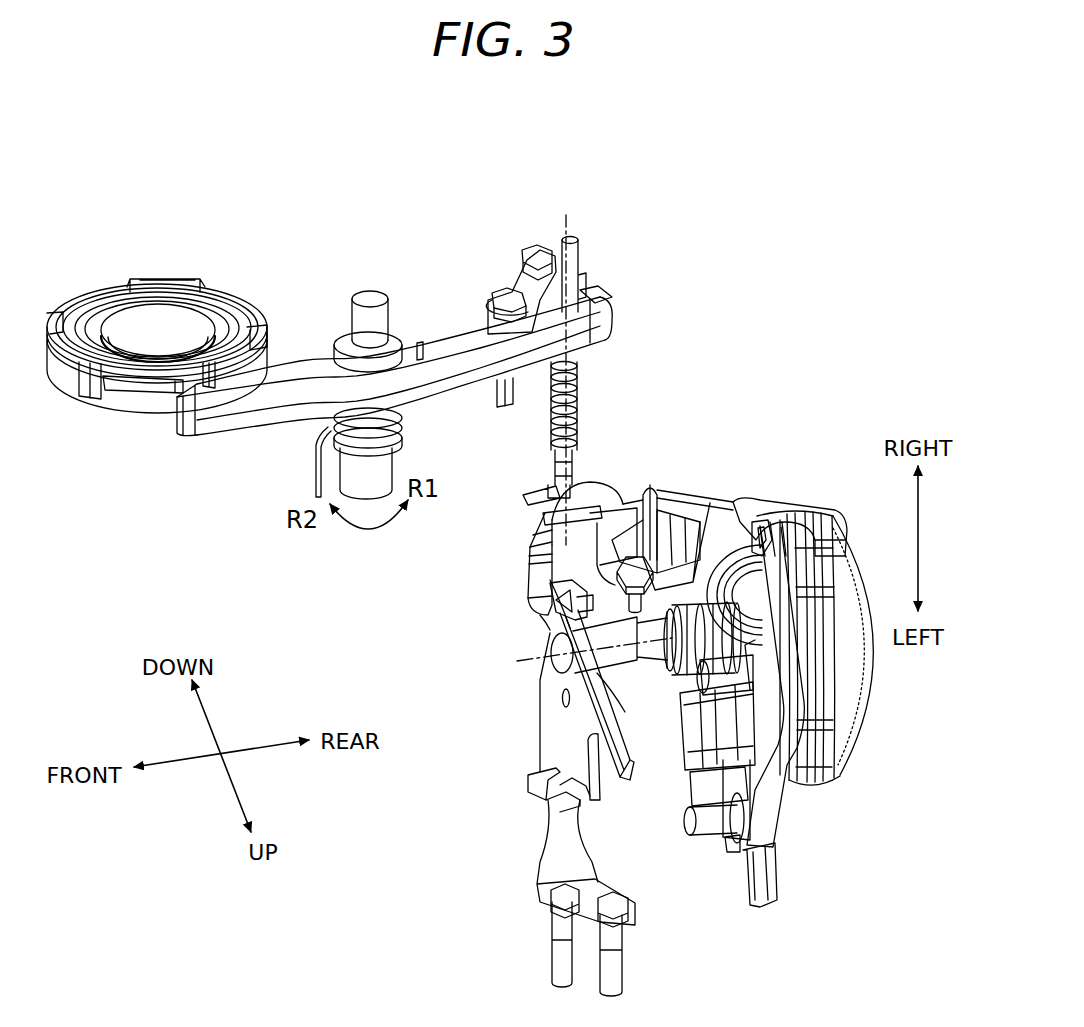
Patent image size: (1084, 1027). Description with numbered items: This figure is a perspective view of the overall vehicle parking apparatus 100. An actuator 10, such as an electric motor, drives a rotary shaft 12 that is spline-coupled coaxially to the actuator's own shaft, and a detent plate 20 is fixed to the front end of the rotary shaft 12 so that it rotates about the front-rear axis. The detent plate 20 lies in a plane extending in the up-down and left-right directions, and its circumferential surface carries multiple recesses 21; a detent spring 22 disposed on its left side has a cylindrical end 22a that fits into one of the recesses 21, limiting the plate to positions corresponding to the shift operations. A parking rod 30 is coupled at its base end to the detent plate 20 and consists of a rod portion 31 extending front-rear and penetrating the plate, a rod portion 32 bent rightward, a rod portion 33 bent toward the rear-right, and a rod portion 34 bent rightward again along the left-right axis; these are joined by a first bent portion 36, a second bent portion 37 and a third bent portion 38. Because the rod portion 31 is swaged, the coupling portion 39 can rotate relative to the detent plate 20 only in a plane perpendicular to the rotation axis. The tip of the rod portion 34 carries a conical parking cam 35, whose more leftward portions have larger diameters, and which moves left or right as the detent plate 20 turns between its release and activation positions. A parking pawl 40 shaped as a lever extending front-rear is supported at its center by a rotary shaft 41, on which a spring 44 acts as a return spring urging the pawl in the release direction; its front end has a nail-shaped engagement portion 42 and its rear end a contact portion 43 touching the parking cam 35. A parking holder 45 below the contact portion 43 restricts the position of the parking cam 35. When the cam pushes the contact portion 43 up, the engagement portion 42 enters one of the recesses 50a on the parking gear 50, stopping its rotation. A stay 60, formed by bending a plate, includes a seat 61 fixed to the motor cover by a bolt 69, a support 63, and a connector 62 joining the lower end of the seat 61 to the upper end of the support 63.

The vehicle parking apparatus 100 is at (672, 210).
The actuator 10 is at (870, 688).
The rotary shaft 12 is at (625, 712).
The detent plate 20 is at (536, 742).
The recesses 21 is at (580, 806).
The detent spring 22 is at (542, 862).
The cylindrical end 22a is at (540, 778).
The parking rod 30 is at (586, 383).
The rod portion 31 is at (560, 515).
The rod portion 32 is at (522, 580).
The rod portion 33 is at (536, 524).
The rod portion 34 is at (578, 414).
The parking cam 35 is at (576, 282).
The first bent portion 36 is at (537, 606).
The second bent portion 37 is at (526, 549).
The third bent portion 38 is at (551, 487).
The coupling portion 39 is at (636, 648).
The parking pawl 40 is at (446, 340).
The rotary shaft 41 is at (372, 294).
The engagement portion 42 is at (186, 388).
The contact portion 43 is at (598, 296).
The spring 44 is at (400, 428).
The parking holder 45 is at (531, 290).
The parking gear 50 is at (68, 372).
The recesses 50a is at (99, 392).
The stay 60 is at (617, 490).
The seat 61 is at (750, 508).
The connector 62 is at (617, 533).
The support 63 is at (590, 493).
The bolt 69 is at (660, 560).